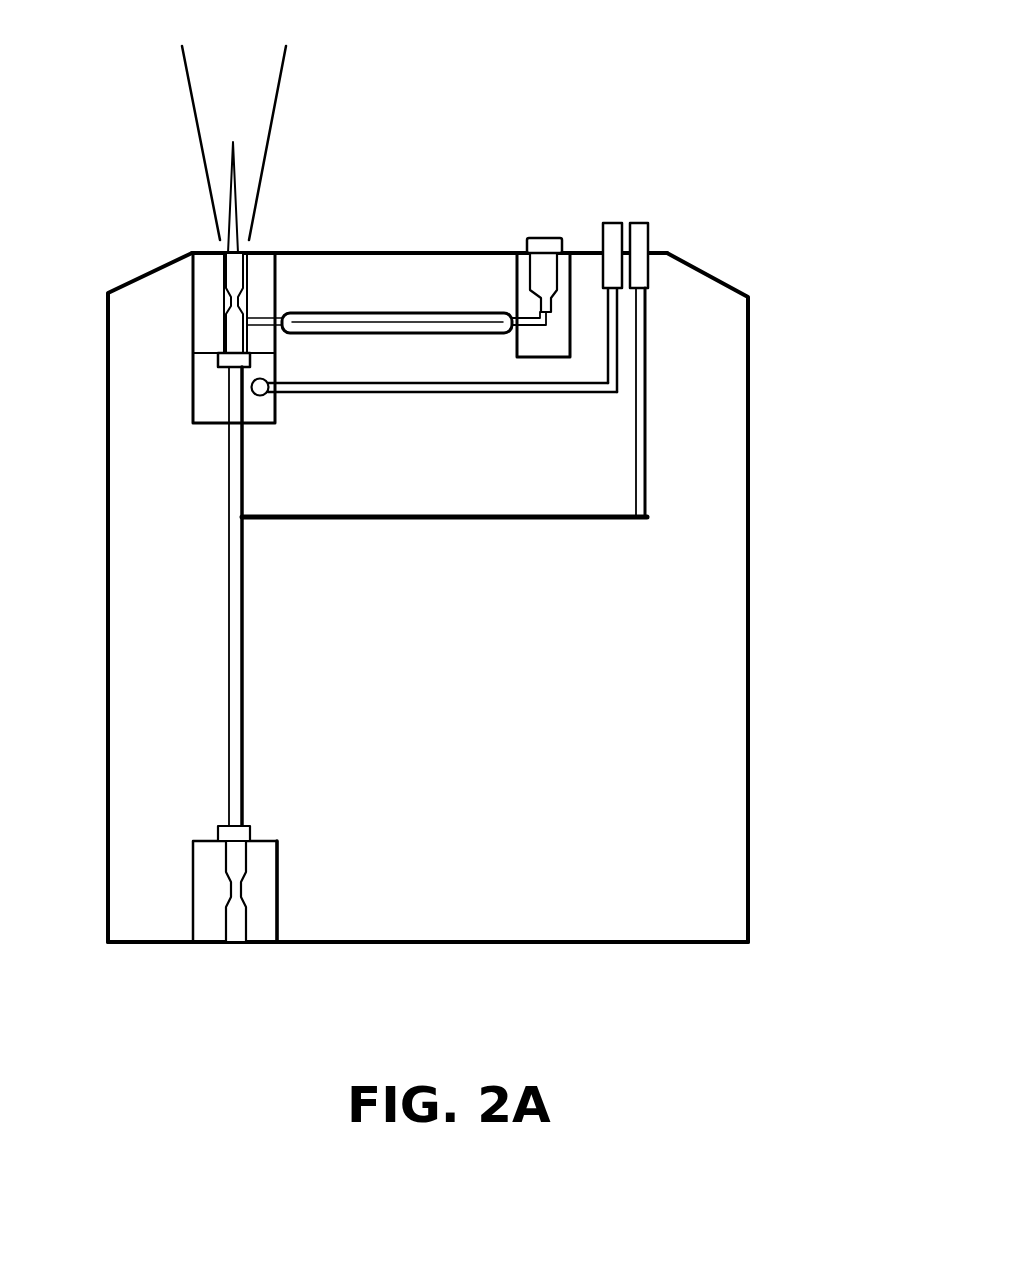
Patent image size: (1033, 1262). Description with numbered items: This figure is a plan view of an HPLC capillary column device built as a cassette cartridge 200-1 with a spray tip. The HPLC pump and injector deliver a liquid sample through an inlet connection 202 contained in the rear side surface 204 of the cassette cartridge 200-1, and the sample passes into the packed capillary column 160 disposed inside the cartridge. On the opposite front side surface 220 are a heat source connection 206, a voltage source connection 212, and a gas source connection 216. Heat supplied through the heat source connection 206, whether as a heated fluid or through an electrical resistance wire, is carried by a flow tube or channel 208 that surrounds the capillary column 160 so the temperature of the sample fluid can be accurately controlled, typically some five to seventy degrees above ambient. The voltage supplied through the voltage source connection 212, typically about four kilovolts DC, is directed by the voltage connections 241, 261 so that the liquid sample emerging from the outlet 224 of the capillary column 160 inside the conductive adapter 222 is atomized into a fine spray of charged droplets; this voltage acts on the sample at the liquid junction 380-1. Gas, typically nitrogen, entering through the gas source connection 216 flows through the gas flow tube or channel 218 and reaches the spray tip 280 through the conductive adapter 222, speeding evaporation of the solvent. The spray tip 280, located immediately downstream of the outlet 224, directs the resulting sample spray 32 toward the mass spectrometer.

The sample spray 32 is at (187, 72).
The spray tip 280 is at (231, 186).
The front side surface 220 is at (303, 252).
The conductive adapter 222 is at (193, 341).
The outlet 224 is at (226, 300).
The liquid junction 380-1 is at (226, 403).
The capillary column 160 is at (244, 581).
The gas flow tube or channel 218 is at (322, 335).
The gas source connection 216 is at (531, 238).
The voltage source connection 212 is at (612, 223).
The heat source connection 206 is at (650, 243).
The flow tube or channel 208 is at (648, 436).
The voltage connection 241 is at (268, 393).
The voltage connection 261 is at (442, 387).
The inlet connection 202 is at (247, 943).
The rear side surface 204 is at (672, 943).
The cassette cartridge 200-1 is at (750, 616).